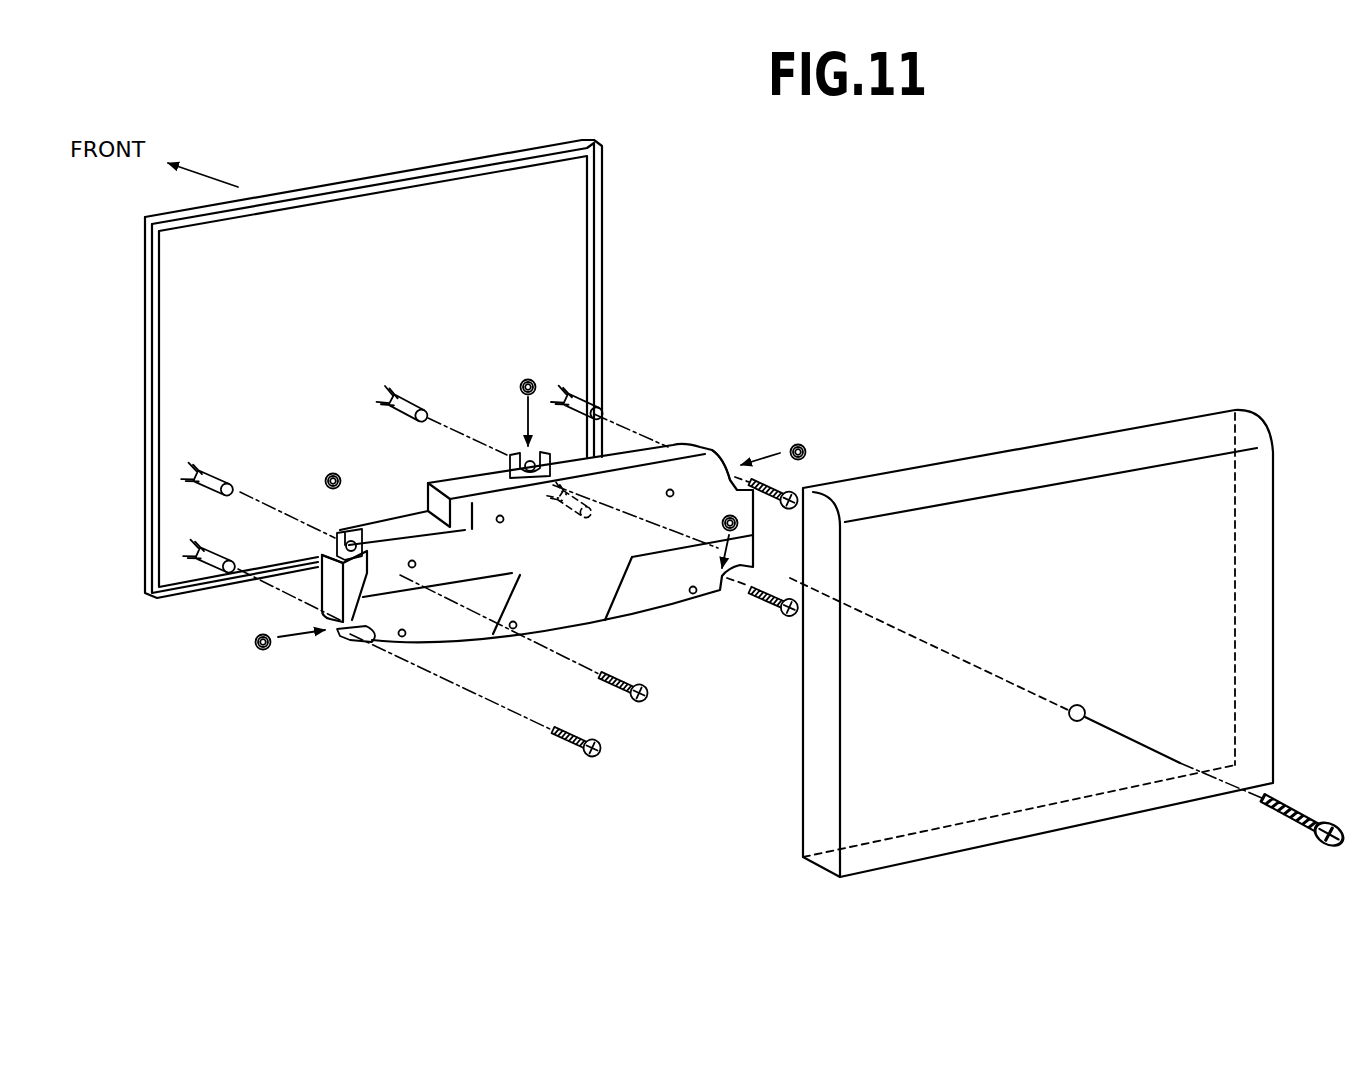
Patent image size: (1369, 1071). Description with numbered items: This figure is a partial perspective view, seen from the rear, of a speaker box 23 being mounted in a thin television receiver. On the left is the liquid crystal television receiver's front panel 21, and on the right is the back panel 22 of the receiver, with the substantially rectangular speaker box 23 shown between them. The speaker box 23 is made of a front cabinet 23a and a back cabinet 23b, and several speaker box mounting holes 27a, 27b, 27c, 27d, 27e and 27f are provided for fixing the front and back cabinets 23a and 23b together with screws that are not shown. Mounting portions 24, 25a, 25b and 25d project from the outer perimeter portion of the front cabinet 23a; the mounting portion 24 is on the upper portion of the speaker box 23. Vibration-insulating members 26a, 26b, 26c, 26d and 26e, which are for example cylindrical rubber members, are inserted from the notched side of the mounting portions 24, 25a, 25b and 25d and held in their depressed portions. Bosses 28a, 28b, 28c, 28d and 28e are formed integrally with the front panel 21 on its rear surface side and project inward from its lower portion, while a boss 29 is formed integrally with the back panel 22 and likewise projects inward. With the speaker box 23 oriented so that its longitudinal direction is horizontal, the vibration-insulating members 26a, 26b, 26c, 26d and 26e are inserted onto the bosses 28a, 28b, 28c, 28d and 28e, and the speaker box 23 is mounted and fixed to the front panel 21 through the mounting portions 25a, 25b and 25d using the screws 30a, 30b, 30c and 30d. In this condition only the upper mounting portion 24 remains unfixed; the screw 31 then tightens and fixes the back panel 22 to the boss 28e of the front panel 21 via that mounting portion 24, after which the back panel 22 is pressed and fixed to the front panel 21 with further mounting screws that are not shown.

The front panel 21 is at (578, 220).
The back panel 22 is at (1182, 447).
The speaker box 23 is at (592, 466).
The front cabinet 23a is at (557, 493).
The back cabinet 23b is at (717, 453).
The mounting portion 24 is at (511, 454).
The mounting portion 25a is at (336, 528).
The mounting portion 25b is at (343, 635).
The mounting portion 25d is at (720, 456).
The vibration-insulating member 26a is at (333, 473).
The vibration-insulating member 26b is at (257, 650).
The vibration-insulating member 26c is at (738, 527).
The vibration-insulating member 26d is at (808, 446).
The vibration-insulating member 26e is at (528, 378).
The speaker box mounting hole 27a is at (420, 565).
The speaker box mounting hole 27b is at (408, 636).
The speaker box mounting hole 27c is at (517, 625).
The speaker box mounting hole 27d is at (696, 594).
The speaker box mounting hole 27e is at (672, 490).
The speaker box mounting hole 27f is at (505, 520).
The boss 28a is at (200, 468).
The boss 28b is at (200, 566).
The boss 28c is at (600, 521).
The boss 28d is at (583, 393).
The boss 28e is at (398, 395).
The boss 29 is at (1062, 698).
The screw 30a is at (643, 700).
The screw 30b is at (591, 757).
The screw 30c is at (776, 612).
The screw 30d is at (790, 481).
The screw 31 is at (1325, 792).